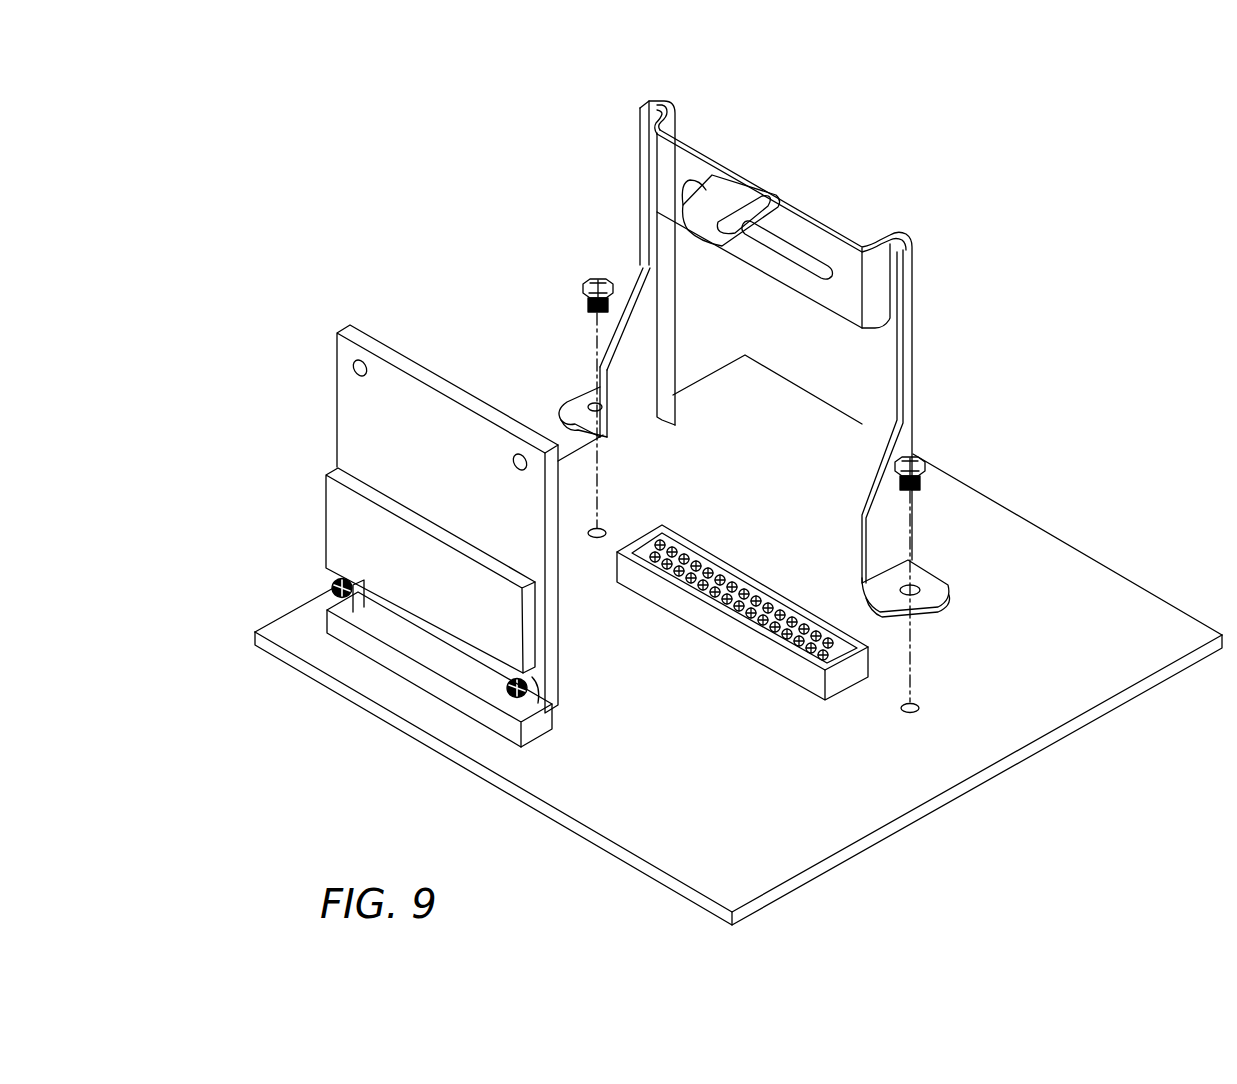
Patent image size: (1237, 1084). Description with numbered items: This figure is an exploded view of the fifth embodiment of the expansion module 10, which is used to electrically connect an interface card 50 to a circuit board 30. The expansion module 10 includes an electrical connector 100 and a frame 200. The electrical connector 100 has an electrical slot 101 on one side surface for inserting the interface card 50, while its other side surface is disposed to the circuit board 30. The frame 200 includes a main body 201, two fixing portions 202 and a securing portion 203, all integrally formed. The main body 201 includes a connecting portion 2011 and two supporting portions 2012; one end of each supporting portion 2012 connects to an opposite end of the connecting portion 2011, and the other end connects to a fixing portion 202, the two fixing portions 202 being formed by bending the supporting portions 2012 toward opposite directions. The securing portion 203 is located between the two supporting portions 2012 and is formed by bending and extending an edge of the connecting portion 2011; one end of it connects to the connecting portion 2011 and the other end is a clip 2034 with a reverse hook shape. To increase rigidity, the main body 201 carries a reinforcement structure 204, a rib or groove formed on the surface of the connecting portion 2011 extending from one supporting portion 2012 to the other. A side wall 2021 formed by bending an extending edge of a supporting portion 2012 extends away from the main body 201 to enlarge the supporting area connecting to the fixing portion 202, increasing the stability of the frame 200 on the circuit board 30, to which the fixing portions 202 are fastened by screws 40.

The expansion module 10 is at (259, 108).
The circuit board 30 is at (1150, 612).
The screw 40 is at (592, 283).
The interface card 50 is at (352, 410).
The electrical connector 100 is at (813, 711).
The electrical slot 101 is at (810, 662).
The frame 200 is at (760, 351).
The main body 201 is at (828, 373).
The connecting portion 2011 is at (707, 172).
The supporting portion 2012 is at (650, 230).
The side wall 2021 is at (633, 346).
The fixing portion 202 is at (578, 392).
The securing portion 203 is at (745, 192).
The reinforcement structure 204 is at (793, 242).
The clip 2034 is at (737, 248).